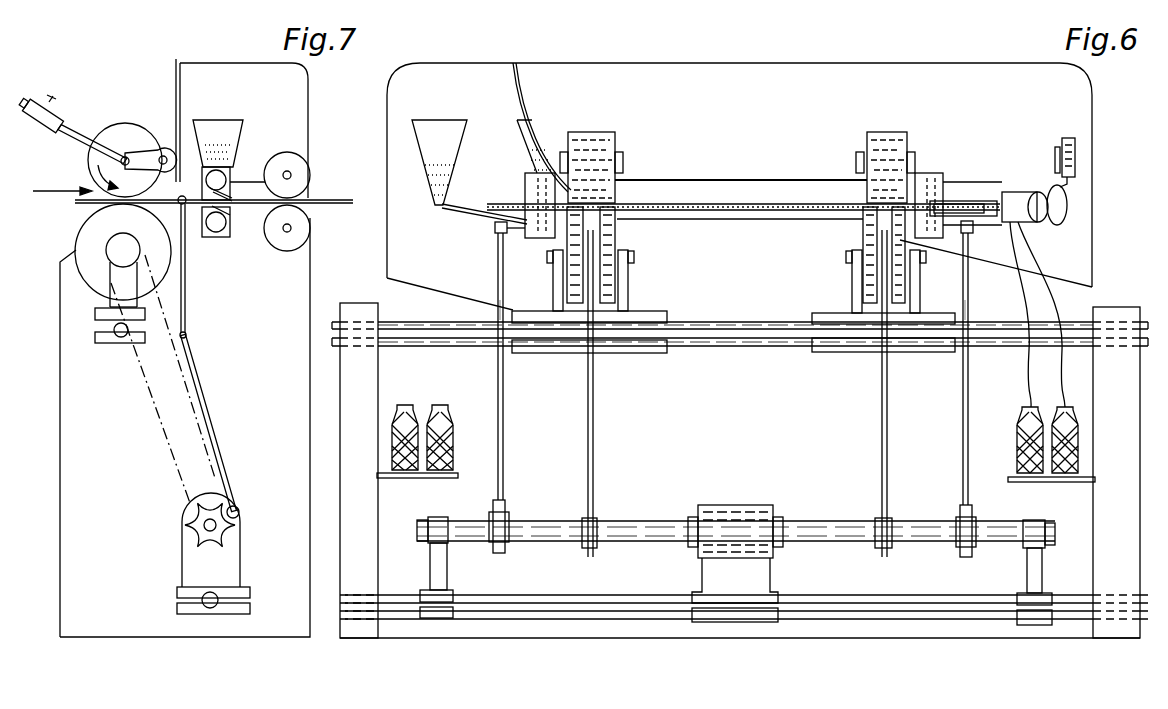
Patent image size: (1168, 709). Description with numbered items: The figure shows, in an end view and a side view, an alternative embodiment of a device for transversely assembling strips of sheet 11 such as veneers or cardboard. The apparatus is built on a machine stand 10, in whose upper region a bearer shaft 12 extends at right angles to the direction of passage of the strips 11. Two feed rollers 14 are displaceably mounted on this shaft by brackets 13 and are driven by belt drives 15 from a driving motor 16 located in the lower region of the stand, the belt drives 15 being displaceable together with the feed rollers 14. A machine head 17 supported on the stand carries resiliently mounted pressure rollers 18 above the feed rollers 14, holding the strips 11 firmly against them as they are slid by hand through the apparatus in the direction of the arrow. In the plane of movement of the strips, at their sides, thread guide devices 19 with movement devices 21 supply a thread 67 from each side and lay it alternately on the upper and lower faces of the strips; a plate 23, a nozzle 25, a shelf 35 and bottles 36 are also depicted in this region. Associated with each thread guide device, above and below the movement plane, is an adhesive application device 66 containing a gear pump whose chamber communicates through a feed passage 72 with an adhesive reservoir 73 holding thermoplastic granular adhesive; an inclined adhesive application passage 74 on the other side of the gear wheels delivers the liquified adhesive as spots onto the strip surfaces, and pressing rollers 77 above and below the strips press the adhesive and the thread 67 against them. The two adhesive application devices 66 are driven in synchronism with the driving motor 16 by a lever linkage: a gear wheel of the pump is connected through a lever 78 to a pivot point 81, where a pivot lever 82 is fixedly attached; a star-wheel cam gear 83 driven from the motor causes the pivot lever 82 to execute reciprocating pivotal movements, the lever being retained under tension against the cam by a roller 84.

In FIG. 7, the machine stand 10 is at (309, 290).
In FIG. 6, the machine stand 10 is at (347, 312).
In FIG. 7, the strips of sheet 11 is at (344, 200).
In FIG. 6, the strips of sheet 11 is at (798, 212).
In FIG. 7, the bearer shaft 12 is at (116, 330).
In FIG. 6, the bearer shaft 12 is at (714, 347).
In FIG. 7, the brackets 13 is at (138, 342).
In FIG. 6, the brackets 13 is at (553, 353).
In FIG. 7, the feed rollers 14 is at (83, 238).
In FIG. 6, the feed rollers 14 is at (607, 302).
In FIG. 7, the belt drives 15 is at (157, 420).
In FIG. 6, the belt drives 15 is at (594, 466).
In FIG. 7, the driving motor 16 is at (183, 568).
In FIG. 6, the driving motor 16 is at (736, 512).
In FIG. 7, the machine head 17 is at (200, 68).
In FIG. 6, the machine head 17 is at (686, 137).
In FIG. 7, the pressure rollers 18 is at (120, 135).
In FIG. 6, the pressure rollers 18 is at (608, 135).
In FIG. 6, the thread guide devices 19 is at (1025, 192).
In FIG. 6, the movement devices 21 is at (1068, 210).
In FIG. 6, the support plate 23 is at (744, 182).
In FIG. 6, the nozzle 25 is at (985, 200).
In FIG. 6, the shelf 35 is at (410, 463).
In FIG. 6, the bottle 36 is at (455, 445).
In FIG. 7, the adhesive application device 66 is at (232, 172).
In FIG. 6, the adhesive application device 66 is at (527, 188).
In FIG. 6, the thread 67 is at (1025, 258).
In FIG. 6, the feed passage 72 is at (462, 211).
In FIG. 7, the adhesive reservoir 73 is at (205, 128).
In FIG. 6, the adhesive reservoir 73 is at (432, 125).
In FIG. 7, the adhesive application passage 74 is at (229, 198).
In FIG. 7, the pressing rollers 77 is at (300, 218).
In FIG. 7, the lever 78 is at (186, 283).
In FIG. 6, the lever 78 is at (497, 378).
In FIG. 7, the pivot point 81 is at (186, 338).
In FIG. 7, the pivot lever 82 is at (206, 407).
In FIG. 6, the pivot lever 82 is at (504, 472).
In FIG. 7, the cam gear 83 is at (194, 510).
In FIG. 6, the cam gear 83 is at (507, 545).
In FIG. 7, the roller 84 is at (242, 512).